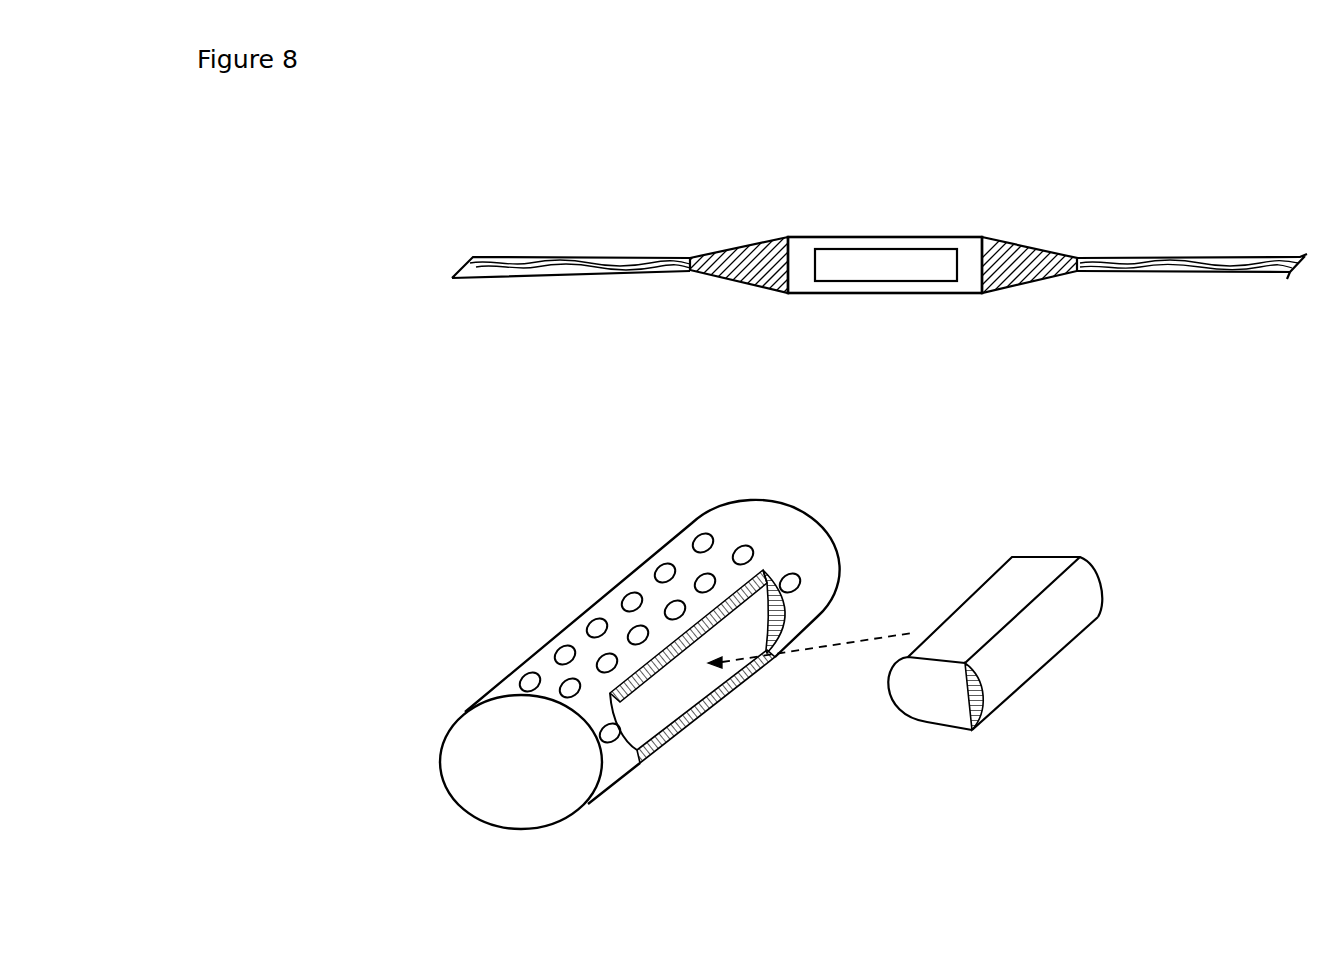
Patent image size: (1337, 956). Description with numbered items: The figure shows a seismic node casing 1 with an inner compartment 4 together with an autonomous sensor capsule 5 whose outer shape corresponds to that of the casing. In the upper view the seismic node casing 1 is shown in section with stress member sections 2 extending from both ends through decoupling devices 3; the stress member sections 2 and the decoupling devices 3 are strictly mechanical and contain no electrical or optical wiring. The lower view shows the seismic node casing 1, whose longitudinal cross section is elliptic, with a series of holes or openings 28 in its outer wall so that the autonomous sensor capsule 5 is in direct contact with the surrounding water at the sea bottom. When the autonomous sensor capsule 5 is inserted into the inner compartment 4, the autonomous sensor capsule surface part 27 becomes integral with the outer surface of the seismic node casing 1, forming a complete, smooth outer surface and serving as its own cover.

The seismic node casing 1 is at (827, 298).
The stress member sections 2 is at (633, 258).
The decoupling devices 3 is at (763, 240).
The inner compartment 4 is at (915, 282).
The autonomous sensor capsule 5 is at (1017, 572).
The autonomous sensor capsule surface part 27 is at (1028, 663).
The holes or openings 28 is at (703, 543).